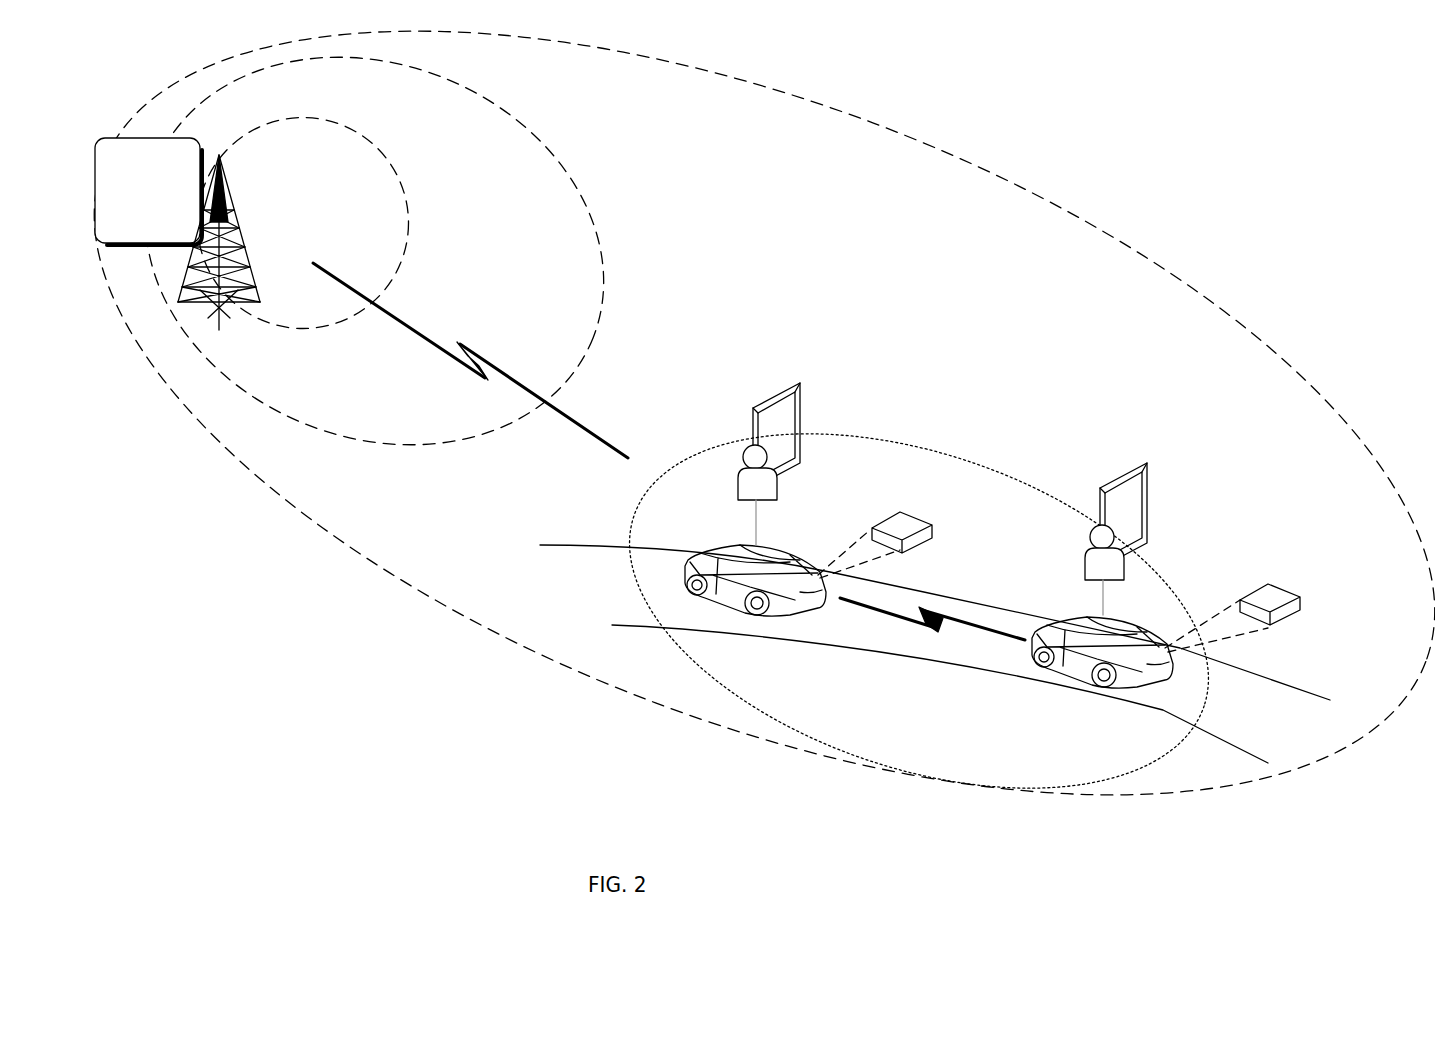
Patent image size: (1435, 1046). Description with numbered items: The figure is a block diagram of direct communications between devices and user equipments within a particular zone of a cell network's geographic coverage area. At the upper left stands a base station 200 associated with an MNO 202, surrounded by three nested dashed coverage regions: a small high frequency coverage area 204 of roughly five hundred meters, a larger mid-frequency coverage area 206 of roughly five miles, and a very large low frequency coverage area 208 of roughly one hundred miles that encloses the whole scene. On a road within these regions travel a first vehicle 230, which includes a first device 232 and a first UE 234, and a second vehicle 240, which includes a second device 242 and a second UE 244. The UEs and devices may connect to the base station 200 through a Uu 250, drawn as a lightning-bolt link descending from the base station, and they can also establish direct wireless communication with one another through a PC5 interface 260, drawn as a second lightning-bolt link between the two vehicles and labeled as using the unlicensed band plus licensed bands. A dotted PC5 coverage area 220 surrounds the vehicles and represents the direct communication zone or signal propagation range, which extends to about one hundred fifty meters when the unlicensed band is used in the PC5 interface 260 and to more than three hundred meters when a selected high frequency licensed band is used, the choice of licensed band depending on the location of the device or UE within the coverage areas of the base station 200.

The base station 200 is at (237, 240).
The MNO 202 is at (148, 191).
The high frequency (HF) coverage area 204 is at (383, 162).
The mid-frequency (MF) coverage area 206 is at (560, 160).
The low frequency (LF) coverage area 208 is at (952, 155).
The PC5 coverage area 220 is at (905, 446).
The first vehicle 230 is at (733, 545).
The first device 232 is at (898, 512).
The first UE 234 is at (795, 383).
The second vehicle 240 is at (1070, 610).
The second device 242 is at (1262, 582).
The second UE 244 is at (1147, 468).
The Uu 250 is at (415, 330).
The PC5 interface 260 is at (977, 631).